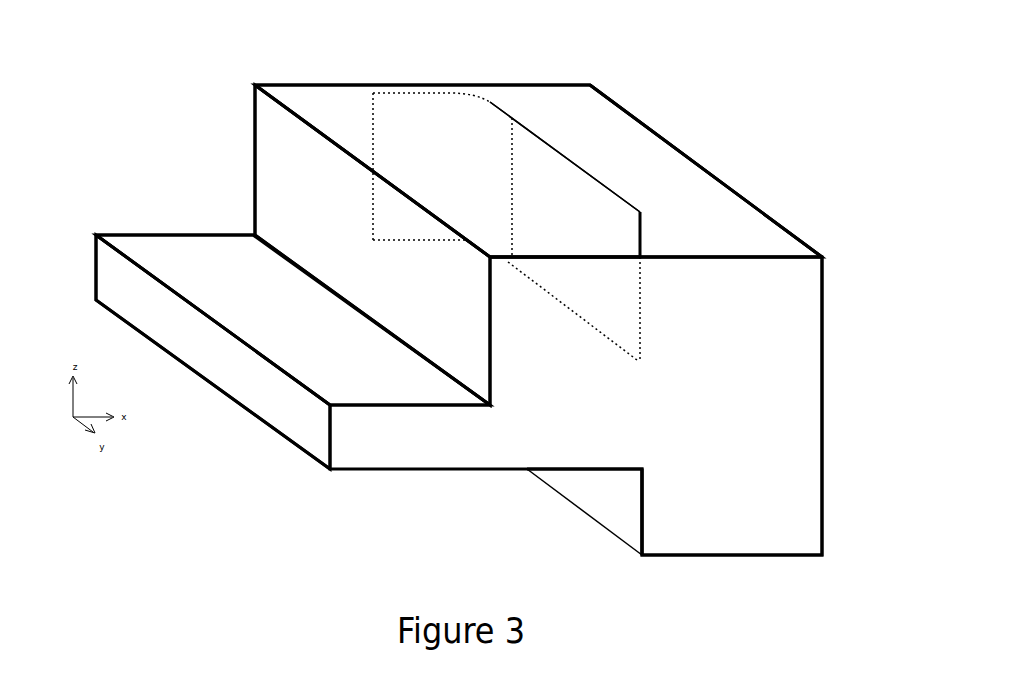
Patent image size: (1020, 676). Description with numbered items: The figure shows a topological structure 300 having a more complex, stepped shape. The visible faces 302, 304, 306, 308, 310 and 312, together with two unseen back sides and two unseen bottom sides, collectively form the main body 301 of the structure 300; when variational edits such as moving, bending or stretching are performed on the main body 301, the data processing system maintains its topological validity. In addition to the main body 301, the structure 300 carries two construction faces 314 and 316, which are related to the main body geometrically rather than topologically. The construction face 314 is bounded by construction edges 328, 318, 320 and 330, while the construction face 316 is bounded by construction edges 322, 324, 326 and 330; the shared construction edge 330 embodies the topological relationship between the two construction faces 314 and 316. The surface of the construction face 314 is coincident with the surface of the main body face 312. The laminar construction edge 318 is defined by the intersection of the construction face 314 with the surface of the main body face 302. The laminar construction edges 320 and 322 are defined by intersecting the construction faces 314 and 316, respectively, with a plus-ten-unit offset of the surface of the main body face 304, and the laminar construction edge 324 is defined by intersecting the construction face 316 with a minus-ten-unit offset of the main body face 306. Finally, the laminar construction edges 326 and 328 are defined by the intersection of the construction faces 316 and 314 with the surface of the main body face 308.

The topological structure 300 is at (685, 55).
The main body 301 is at (714, 164).
The main body face 302 is at (769, 289).
The main body face 304 is at (552, 113).
The main body face 306 is at (267, 155).
The main body face 308 is at (162, 265).
The main body face 310 is at (108, 301).
The main body face 312 is at (589, 500).
The construction face 314 is at (547, 240).
The construction face 316 is at (417, 185).
The laminar construction edge 318 is at (642, 333).
The laminar construction edge 320 is at (600, 183).
The laminar construction edge 322 is at (487, 100).
The laminar construction edge 324 is at (370, 215).
The laminar construction edge 326 is at (437, 243).
The laminar construction edge 328 is at (606, 336).
The construction edge 330 is at (507, 178).